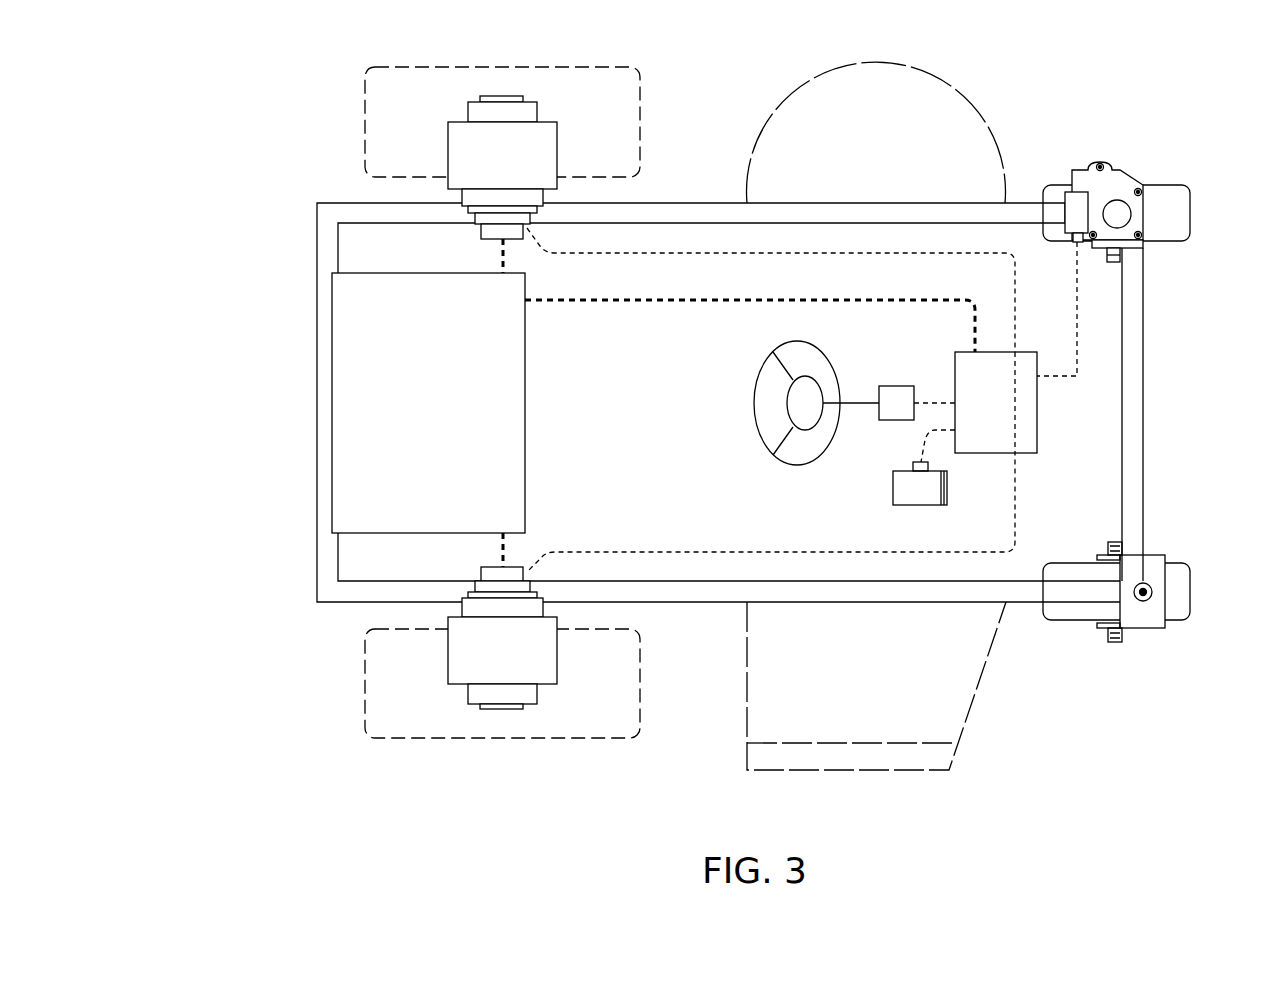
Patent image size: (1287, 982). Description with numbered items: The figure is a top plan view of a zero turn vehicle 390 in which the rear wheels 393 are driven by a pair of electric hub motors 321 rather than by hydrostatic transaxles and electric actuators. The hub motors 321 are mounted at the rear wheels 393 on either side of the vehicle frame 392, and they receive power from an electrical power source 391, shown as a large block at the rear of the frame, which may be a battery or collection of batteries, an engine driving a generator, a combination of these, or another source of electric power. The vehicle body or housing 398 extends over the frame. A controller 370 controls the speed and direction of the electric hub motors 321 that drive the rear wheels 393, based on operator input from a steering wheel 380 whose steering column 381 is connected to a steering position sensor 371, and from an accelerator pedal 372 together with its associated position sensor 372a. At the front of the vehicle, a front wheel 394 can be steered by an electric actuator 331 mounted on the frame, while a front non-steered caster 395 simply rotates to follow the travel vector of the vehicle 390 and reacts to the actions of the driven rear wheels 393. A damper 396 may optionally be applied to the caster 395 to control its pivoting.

The zero turn vehicle 390 is at (230, 106).
The electric hub motors 321 is at (448, 139).
The rear wheels 393 is at (563, 67).
The frame 392 is at (705, 203).
The housing / body 398 is at (872, 62).
The electrical power source 391 is at (408, 418).
The electric actuator 331 is at (1112, 182).
The front wheel 394 is at (1190, 213).
The front non-steered caster 395 is at (1190, 592).
The damper 396 is at (1148, 600).
The controller 370 is at (976, 418).
The steering position sensor 371 is at (900, 386).
The accelerator pedal 372 is at (900, 471).
The position sensor 372a is at (918, 462).
The steering wheel 380 is at (800, 343).
The steering column 381 is at (862, 403).